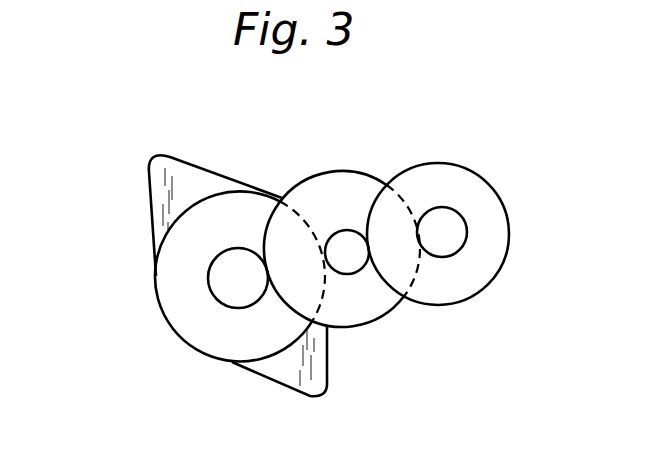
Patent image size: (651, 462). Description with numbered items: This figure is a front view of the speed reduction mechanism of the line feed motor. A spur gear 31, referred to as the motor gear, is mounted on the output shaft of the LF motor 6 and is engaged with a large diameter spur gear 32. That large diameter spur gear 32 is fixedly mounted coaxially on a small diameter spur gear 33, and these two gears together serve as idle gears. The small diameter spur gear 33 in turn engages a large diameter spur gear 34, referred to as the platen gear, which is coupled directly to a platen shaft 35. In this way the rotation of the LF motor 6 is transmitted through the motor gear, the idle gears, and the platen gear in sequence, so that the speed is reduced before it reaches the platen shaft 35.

The LF motor 6 is at (168, 308).
The spur gear 31 is at (217, 278).
The large diameter spur gear 32 is at (332, 182).
The small diameter spur gear 33 is at (348, 263).
The large diameter spur gear 34 is at (437, 168).
The platen shaft 35 is at (455, 232).